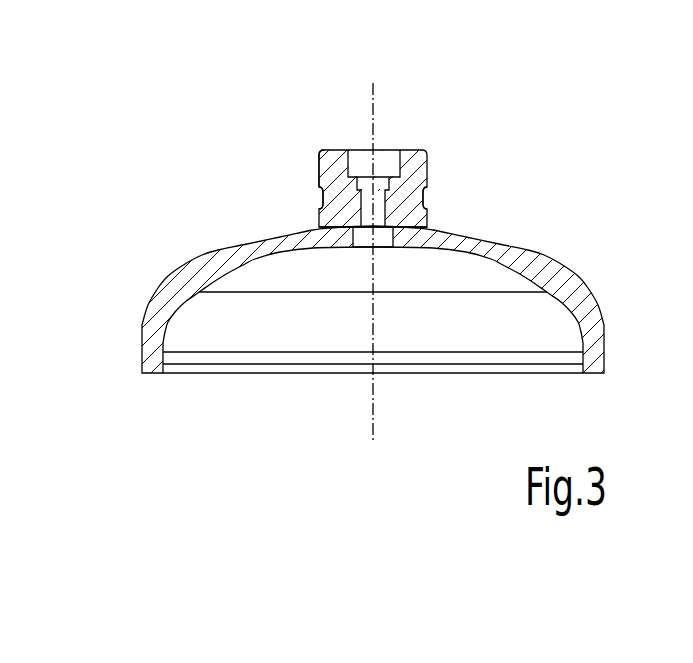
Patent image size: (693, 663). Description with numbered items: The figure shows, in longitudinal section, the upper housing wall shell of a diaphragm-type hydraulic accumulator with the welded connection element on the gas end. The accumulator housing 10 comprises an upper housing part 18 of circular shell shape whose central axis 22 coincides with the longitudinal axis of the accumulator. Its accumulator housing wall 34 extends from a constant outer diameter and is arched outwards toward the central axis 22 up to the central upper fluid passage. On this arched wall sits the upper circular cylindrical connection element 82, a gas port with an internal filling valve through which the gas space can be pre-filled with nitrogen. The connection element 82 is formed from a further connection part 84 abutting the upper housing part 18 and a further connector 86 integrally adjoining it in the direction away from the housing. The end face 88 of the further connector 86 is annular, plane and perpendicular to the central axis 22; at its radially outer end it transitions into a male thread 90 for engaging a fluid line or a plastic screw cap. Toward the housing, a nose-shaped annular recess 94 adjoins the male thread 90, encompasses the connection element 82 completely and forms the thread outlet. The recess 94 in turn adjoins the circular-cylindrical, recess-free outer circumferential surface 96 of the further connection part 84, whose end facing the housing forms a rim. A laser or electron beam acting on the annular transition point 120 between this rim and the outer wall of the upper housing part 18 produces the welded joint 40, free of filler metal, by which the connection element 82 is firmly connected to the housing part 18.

The accumulator housing 10 is at (338, 341).
The upper housing part 18 is at (338, 341).
The accumulator housing wall 34 is at (167, 294).
The central axis 22 is at (368, 400).
The upper circular cylindrical connection element 82 is at (428, 167).
The end face 88 is at (328, 150).
The nose-shaped annular recess 94 is at (425, 197).
The further connection part 84 is at (248, 218).
The outer circumferential surface 96 is at (320, 207).
The further connector 86 is at (238, 163).
The male thread 90 is at (320, 167).
The transition point 120 is at (493, 237).
The welded joint 40 is at (431, 225).